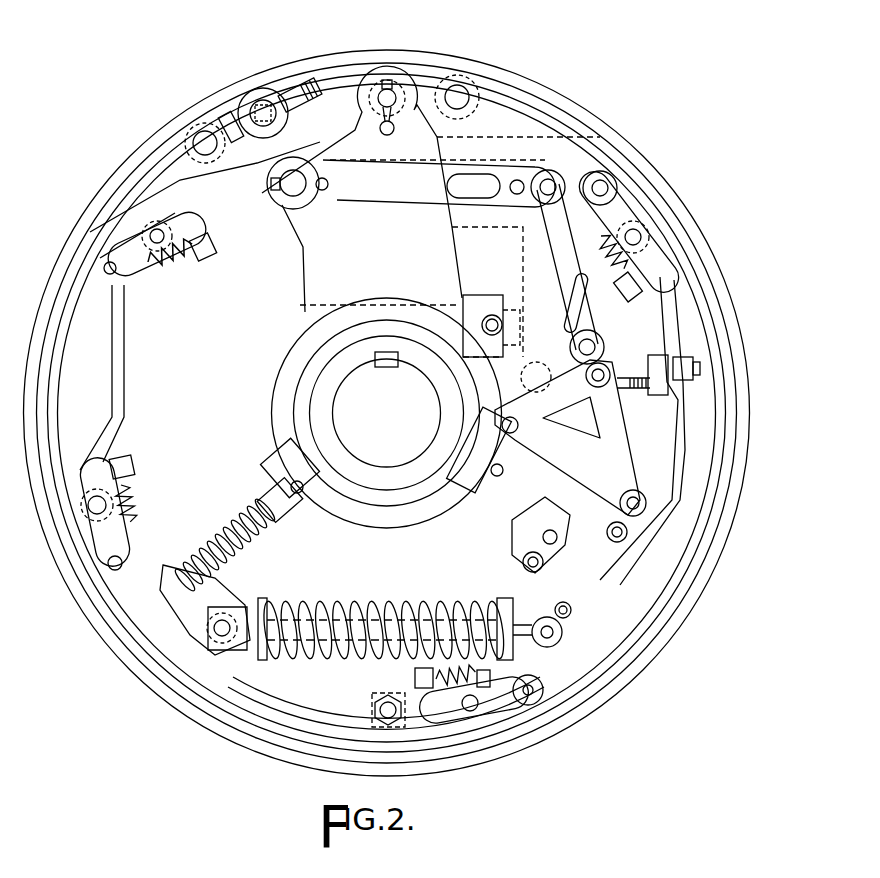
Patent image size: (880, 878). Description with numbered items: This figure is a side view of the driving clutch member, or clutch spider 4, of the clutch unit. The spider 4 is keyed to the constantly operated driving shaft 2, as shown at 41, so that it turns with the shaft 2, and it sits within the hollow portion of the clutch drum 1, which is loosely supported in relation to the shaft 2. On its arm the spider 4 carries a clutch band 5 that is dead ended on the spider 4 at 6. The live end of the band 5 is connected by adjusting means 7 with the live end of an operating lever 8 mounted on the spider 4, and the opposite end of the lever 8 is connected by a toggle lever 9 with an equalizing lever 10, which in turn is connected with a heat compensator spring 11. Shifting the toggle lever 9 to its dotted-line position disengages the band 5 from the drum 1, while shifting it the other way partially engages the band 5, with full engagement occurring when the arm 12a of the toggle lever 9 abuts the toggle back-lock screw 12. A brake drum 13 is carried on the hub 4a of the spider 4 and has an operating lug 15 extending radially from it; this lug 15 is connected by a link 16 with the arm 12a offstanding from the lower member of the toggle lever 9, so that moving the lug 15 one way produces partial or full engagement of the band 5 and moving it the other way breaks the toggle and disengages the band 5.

The clutch drum 1 is at (722, 322).
The driving shaft 2 is at (343, 413).
The clutch spider 4 is at (460, 273).
The hub 4a is at (442, 448).
The key 41 is at (400, 357).
The clutch band 5 is at (677, 233).
The dead end 6 is at (457, 86).
The adjusting means 7 is at (222, 130).
The operating lever 8 is at (485, 192).
The toggle lever 9 is at (570, 292).
The equalizing lever 10 is at (588, 538).
The heat compensator spring 11 is at (445, 603).
The toggle back-lock screw 12 is at (628, 363).
The arm 12a is at (587, 407).
The brake drum 13 is at (399, 500).
The operating lug 15 is at (495, 472).
The link 16 is at (517, 452).